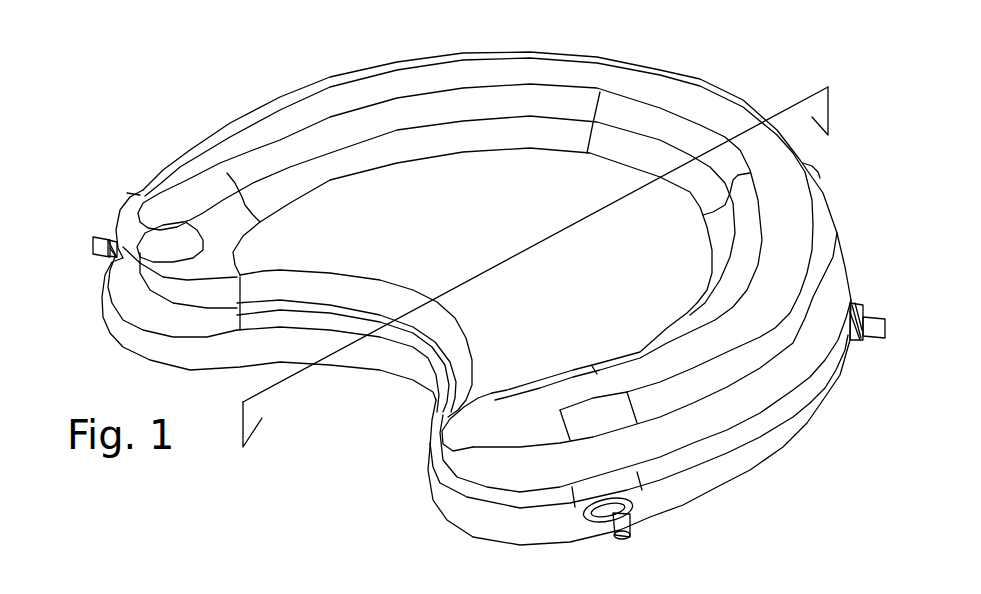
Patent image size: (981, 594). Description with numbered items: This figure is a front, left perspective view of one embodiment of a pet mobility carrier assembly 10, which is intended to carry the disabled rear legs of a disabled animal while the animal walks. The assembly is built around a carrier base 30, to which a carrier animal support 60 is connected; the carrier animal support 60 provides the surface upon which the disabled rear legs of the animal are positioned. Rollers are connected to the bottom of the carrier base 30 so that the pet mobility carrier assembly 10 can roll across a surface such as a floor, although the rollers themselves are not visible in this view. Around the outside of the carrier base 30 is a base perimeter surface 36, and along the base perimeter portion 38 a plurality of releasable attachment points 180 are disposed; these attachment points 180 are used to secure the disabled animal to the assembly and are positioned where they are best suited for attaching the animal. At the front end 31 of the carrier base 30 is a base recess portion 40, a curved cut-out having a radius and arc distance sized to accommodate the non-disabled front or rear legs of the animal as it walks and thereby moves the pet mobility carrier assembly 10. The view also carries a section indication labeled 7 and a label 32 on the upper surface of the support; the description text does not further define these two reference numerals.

The pet mobility carrier assembly 10 is at (434, 297).
The section line 7- 7 is at (536, 285).
The carrier base 30 is at (658, 403).
The front end 31 is at (229, 328).
The top surface 32 is at (473, 212).
The base perimeter surface 36 is at (639, 440).
The base perimeter portion 38 is at (435, 460).
The base recess portion 40 is at (346, 399).
The carrier animal support 60 is at (480, 251).
The releasable attachment points 180 is at (509, 415).